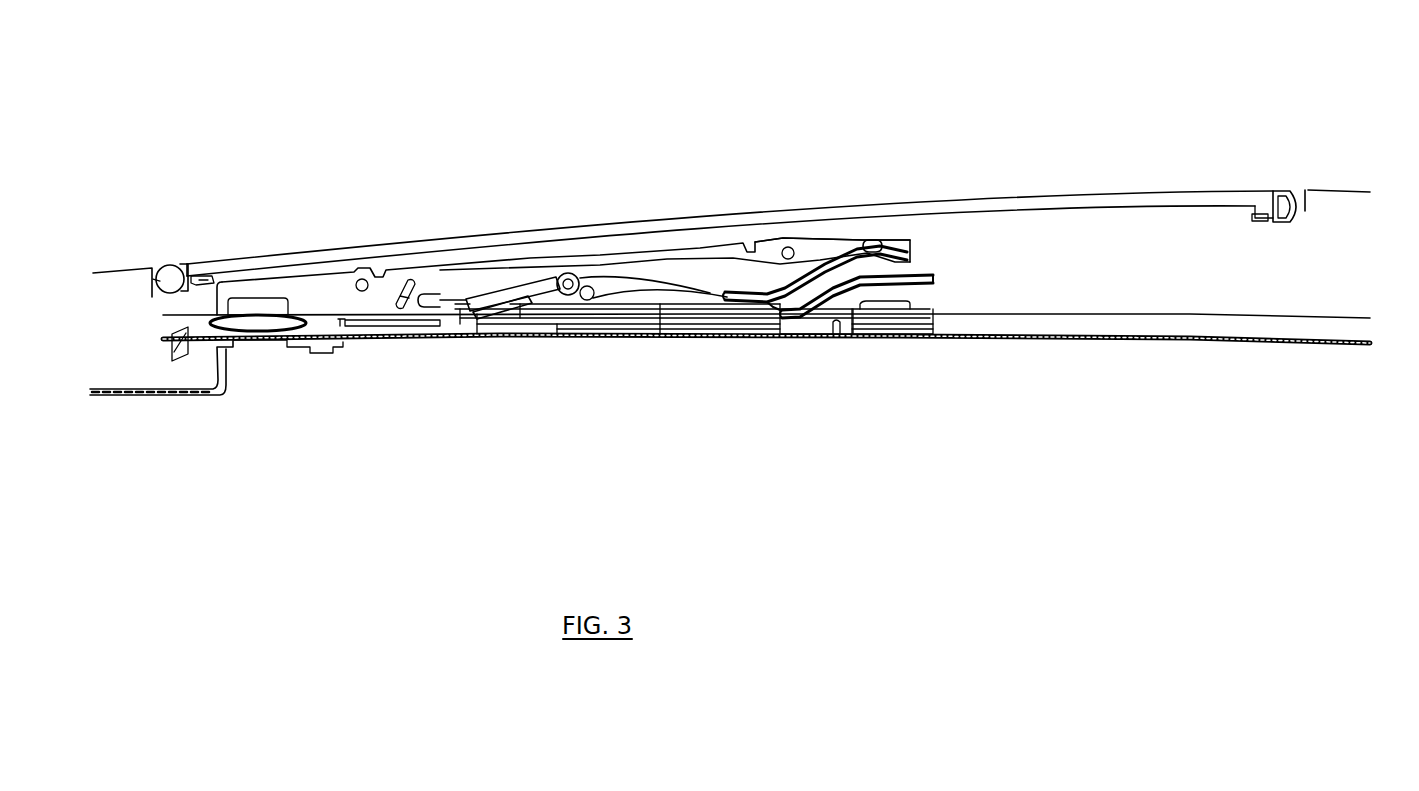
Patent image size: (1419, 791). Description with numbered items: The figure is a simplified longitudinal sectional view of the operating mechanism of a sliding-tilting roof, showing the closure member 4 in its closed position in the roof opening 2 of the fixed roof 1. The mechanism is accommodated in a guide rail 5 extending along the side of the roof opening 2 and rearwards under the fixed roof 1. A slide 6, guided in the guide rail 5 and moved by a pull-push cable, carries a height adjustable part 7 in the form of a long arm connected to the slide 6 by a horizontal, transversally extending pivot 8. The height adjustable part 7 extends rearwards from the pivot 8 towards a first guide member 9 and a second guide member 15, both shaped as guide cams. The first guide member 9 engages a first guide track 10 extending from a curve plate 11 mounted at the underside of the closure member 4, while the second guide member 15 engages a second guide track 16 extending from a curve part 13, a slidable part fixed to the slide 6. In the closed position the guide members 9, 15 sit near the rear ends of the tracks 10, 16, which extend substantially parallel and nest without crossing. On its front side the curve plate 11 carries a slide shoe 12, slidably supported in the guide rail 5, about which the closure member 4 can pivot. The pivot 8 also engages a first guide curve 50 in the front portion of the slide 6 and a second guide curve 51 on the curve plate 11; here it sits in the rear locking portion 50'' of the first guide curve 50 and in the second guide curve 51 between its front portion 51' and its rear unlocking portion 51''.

The fixed roof 1 is at (95, 273).
The roof opening 2 is at (172, 264).
The closure member 4 is at (310, 254).
The guide rail 5 is at (1008, 337).
The slide 6 is at (545, 330).
The height adjustable part 7 is at (718, 277).
The pivot 8 is at (570, 278).
The first guide member 9 is at (873, 247).
The first guide track 10 is at (842, 256).
The curve plate 11 is at (812, 250).
The slide shoe 12 is at (258, 331).
The curve part 13 is at (580, 327).
The second guide member 15 is at (882, 327).
The second guide track 16 is at (820, 327).
The first guide curve 50 is at (491, 373).
The second guide curve 51 is at (468, 363).
The front portion 51' is at (463, 175).
The rear unlocking portion 51'' is at (645, 361).
The rear locking portion 50'' is at (653, 361).